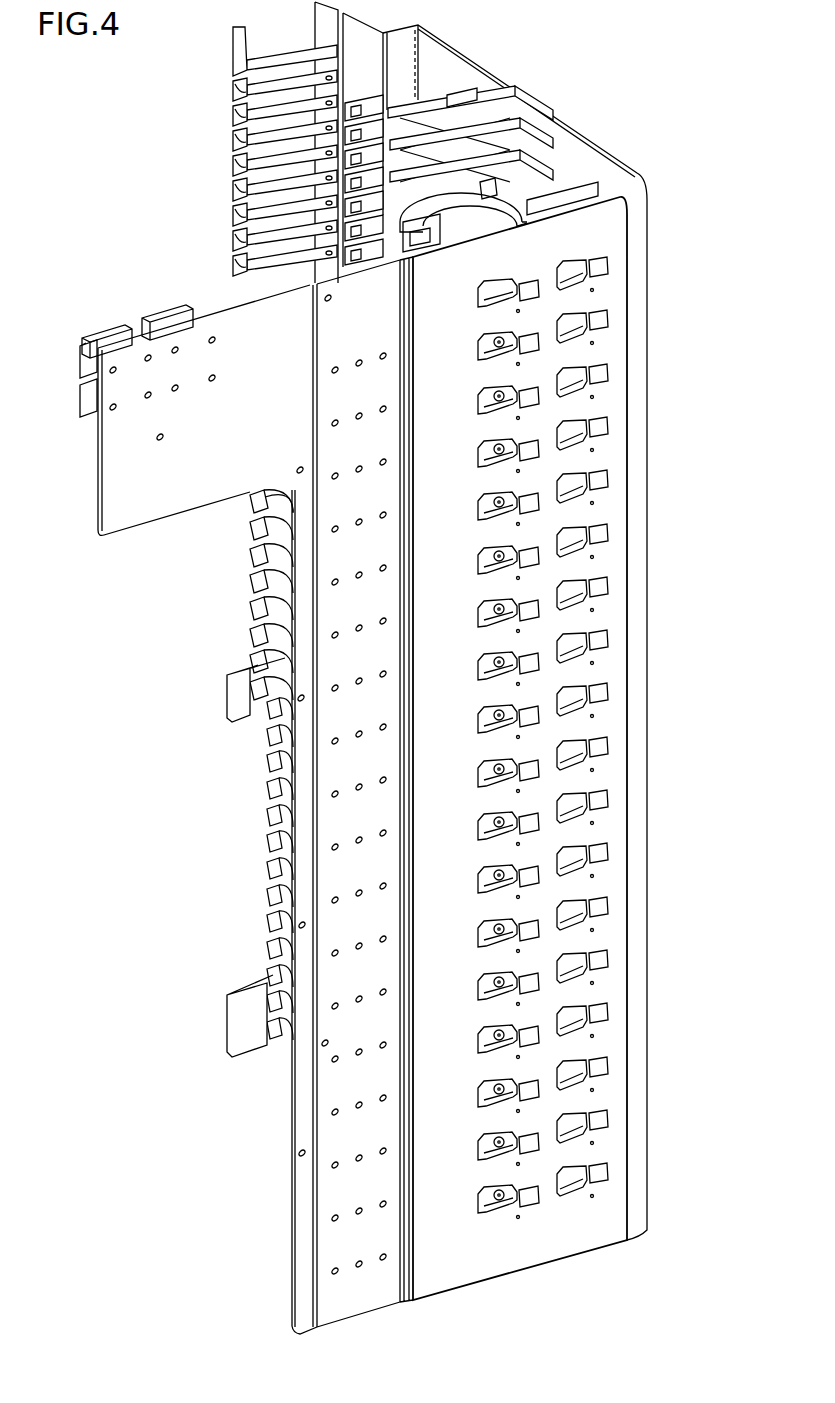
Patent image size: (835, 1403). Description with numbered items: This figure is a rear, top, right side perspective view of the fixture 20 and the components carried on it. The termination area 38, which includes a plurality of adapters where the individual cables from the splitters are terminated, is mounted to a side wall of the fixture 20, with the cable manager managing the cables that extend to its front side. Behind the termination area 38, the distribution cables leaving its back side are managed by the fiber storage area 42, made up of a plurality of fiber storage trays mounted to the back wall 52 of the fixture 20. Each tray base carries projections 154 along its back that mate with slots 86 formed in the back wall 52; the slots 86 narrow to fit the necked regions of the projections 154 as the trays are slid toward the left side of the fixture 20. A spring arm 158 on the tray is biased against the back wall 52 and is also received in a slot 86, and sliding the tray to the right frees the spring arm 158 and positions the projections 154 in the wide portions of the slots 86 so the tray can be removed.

The fixture 20 is at (636, 551).
The termination area 38 is at (234, 193).
The fiber storage area 42 is at (535, 192).
The back wall 52 is at (604, 452).
The slots 86 is at (500, 287).
The projections 154 is at (525, 277).
The spring arm 158 is at (478, 310).